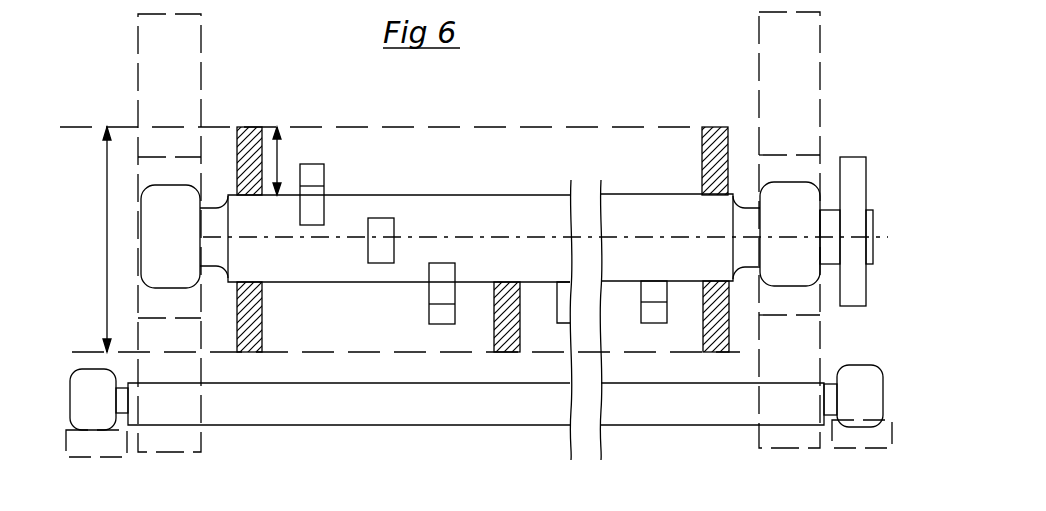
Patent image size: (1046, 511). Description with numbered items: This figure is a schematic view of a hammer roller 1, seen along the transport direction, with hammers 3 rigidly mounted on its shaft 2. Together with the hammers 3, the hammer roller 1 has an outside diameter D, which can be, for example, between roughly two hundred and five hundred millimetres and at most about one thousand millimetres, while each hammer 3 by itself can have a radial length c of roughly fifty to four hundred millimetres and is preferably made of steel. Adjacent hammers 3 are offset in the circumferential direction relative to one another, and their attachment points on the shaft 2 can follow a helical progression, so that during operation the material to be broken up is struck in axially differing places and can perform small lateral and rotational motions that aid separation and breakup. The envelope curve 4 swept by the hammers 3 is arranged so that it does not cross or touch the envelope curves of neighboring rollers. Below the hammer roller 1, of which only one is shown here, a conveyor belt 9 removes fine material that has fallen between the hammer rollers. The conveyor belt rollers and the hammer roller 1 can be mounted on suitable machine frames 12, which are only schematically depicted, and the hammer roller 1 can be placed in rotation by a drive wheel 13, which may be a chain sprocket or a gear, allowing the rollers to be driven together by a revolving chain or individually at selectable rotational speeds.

The hammer roller 1 is at (522, 163).
The shaft 2 is at (517, 233).
The hammers 3 is at (247, 138).
The envelope curve 4 is at (626, 126).
The conveyor belt 9 is at (400, 405).
The machine frame 12 is at (800, 38).
The drive wheel 13 is at (853, 198).
The outside diameter D is at (107, 218).
The radial length c is at (280, 153).